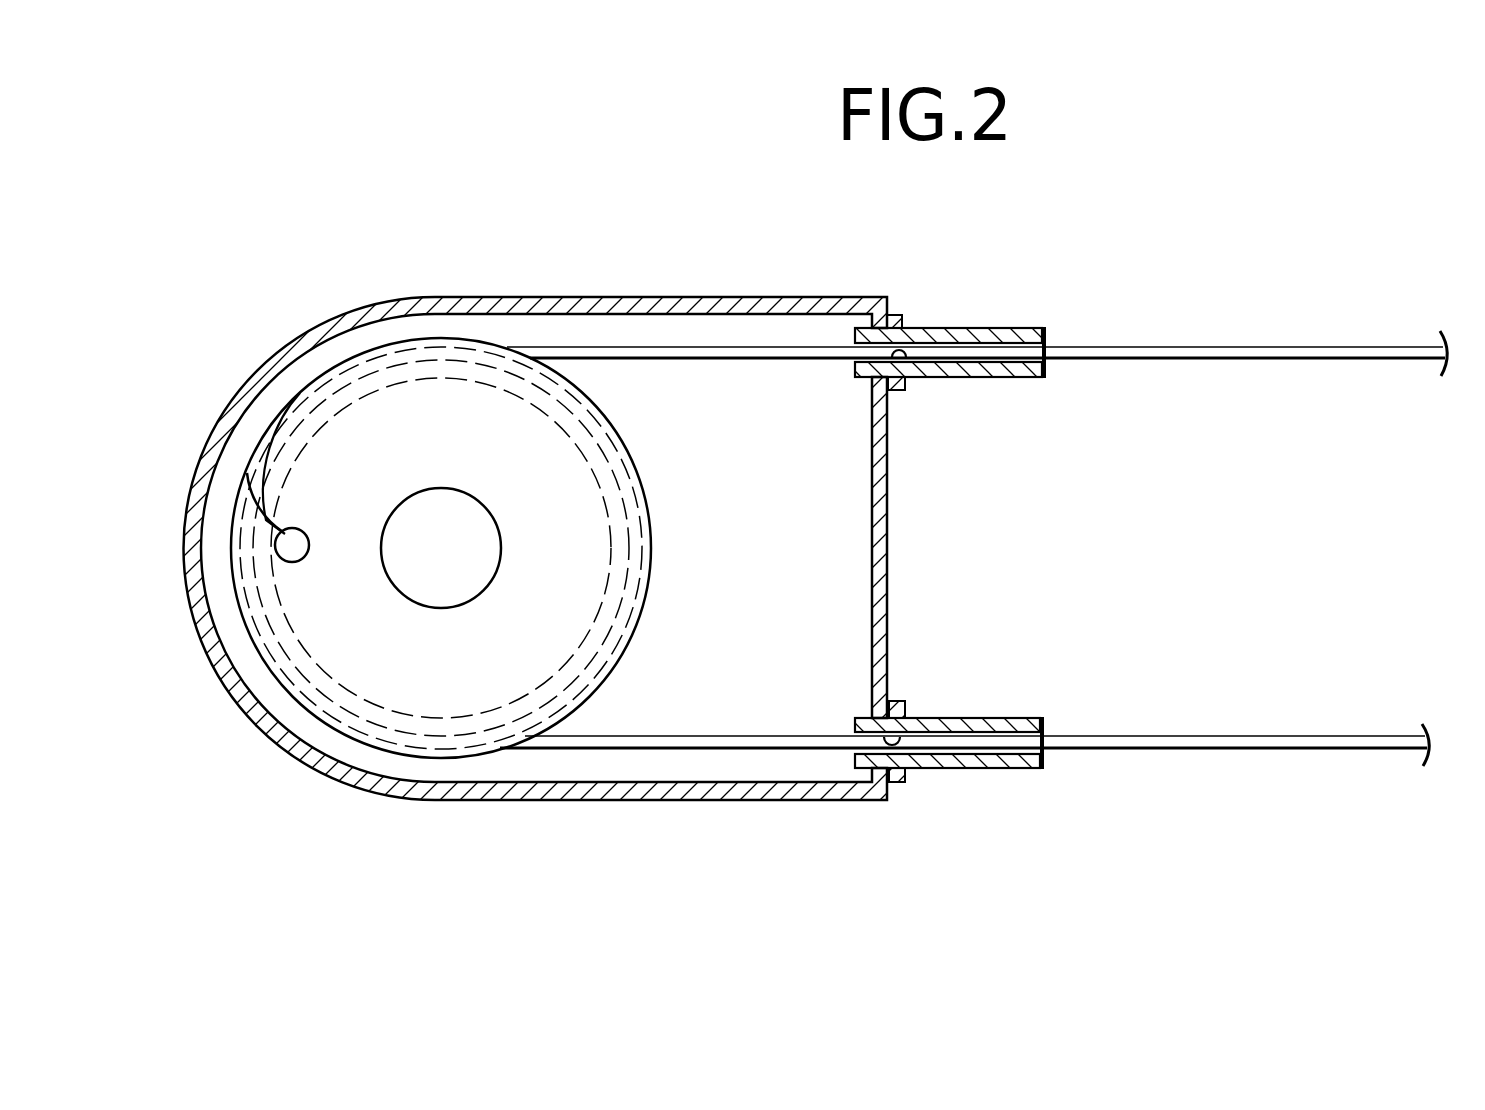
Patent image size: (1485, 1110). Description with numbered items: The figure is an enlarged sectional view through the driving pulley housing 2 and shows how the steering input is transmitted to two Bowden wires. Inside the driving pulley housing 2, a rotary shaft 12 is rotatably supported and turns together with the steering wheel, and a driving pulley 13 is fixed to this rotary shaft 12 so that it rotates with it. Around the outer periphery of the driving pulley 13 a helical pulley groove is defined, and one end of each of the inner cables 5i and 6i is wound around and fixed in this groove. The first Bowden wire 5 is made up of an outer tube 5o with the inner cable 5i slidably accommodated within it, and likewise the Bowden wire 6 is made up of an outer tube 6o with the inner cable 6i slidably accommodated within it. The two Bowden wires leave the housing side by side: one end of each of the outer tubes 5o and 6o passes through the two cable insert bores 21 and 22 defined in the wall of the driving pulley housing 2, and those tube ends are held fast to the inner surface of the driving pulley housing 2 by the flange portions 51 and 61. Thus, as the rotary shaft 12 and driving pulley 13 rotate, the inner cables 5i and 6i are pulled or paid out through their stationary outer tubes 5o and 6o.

The driving pulley housing 2 is at (622, 283).
The driving pulley 13 is at (667, 456).
The rotary shaft 12 is at (480, 541).
The Bowden wire 6 is at (1170, 242).
The outer tube 6o is at (979, 332).
The inner cable 6i is at (1100, 350).
The flange portion 61 is at (894, 317).
The cable insert bore 22 is at (906, 362).
The first Bowden wire 5 is at (1180, 637).
The outer tube 5o is at (975, 722).
The inner cable 5i is at (1088, 742).
The cable insert bore 21 is at (903, 714).
The flange portion 51 is at (894, 783).